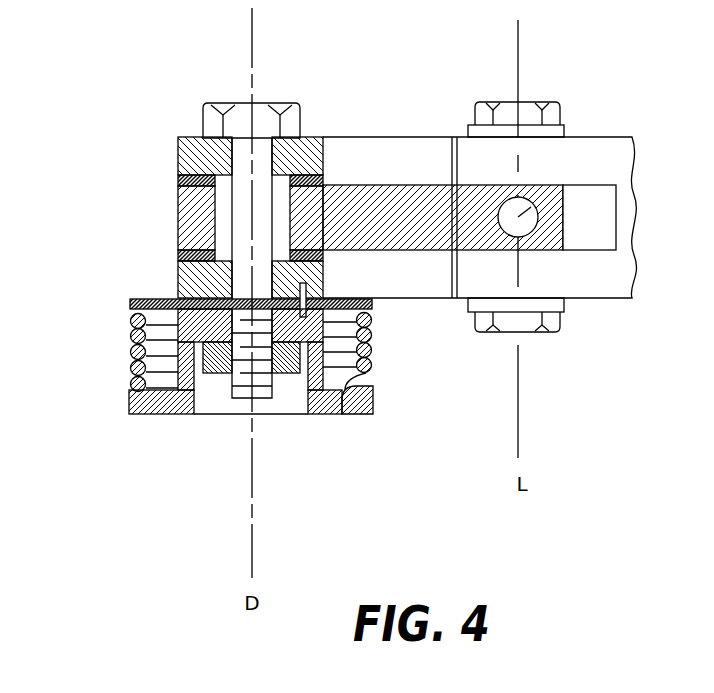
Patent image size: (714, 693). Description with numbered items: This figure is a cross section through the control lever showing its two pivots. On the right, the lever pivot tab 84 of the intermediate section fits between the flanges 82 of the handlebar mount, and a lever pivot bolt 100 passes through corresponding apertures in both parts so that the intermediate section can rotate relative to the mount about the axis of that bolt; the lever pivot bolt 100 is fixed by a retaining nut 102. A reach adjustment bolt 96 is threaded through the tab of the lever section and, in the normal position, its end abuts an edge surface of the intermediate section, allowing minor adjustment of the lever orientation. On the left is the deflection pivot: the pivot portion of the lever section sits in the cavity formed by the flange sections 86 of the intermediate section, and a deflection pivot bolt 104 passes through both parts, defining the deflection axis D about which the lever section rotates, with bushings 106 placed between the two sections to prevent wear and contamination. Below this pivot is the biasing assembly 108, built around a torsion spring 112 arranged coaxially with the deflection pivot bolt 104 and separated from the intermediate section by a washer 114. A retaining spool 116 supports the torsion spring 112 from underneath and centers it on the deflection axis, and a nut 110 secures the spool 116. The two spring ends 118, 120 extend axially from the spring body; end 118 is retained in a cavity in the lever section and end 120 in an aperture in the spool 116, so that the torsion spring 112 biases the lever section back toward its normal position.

The flanges 82 is at (585, 290).
The lever pivot tab 84 is at (178, 217).
The flange sections 86 is at (178, 160).
The reach adjustment bolt 96 is at (552, 184).
The lever pivot bolt 100 is at (540, 102).
The retaining nut 102 is at (527, 332).
The deflection pivot bolt 104 is at (253, 114).
The bushings 106 is at (311, 176).
The biasing assembly 108 is at (92, 396).
The nut 110 is at (218, 392).
The torsion spring 112 is at (130, 366).
The washer 114 is at (372, 303).
The retaining spool 116 is at (305, 395).
The end of torsion spring 118 is at (307, 285).
The end of torsion spring 120 is at (347, 415).